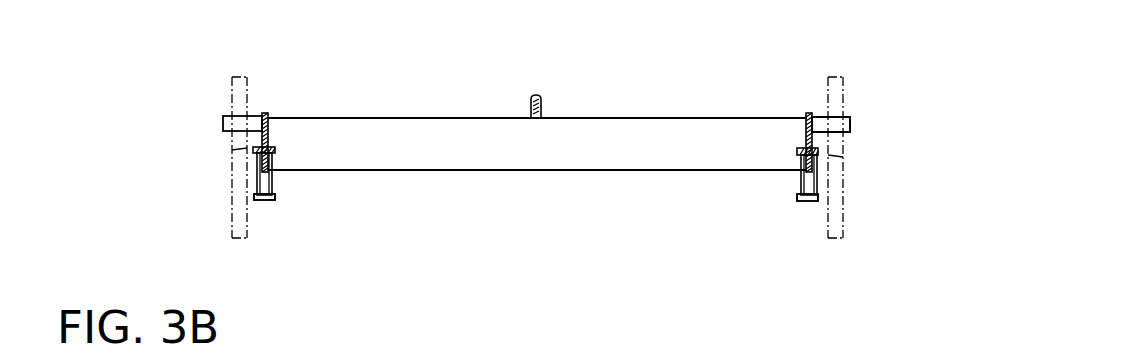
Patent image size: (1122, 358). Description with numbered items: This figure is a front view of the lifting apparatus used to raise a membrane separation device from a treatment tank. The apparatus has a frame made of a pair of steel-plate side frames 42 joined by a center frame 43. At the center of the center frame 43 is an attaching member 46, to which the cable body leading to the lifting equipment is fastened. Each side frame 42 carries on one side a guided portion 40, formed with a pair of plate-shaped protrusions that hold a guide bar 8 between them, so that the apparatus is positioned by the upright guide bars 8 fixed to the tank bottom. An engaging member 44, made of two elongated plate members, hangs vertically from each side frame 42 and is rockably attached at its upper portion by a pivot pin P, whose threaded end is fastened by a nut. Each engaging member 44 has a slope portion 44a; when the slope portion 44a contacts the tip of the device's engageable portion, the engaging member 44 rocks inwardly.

The guide bar 8 is at (229, 90).
The guided portion 40 is at (850, 127).
The side frame 42 is at (264, 114).
The center frame 43 is at (635, 118).
The engaging member 44 is at (275, 178).
The slope portion 44a is at (265, 201).
The attaching member 46 is at (538, 95).
The pivot pin P is at (247, 148).